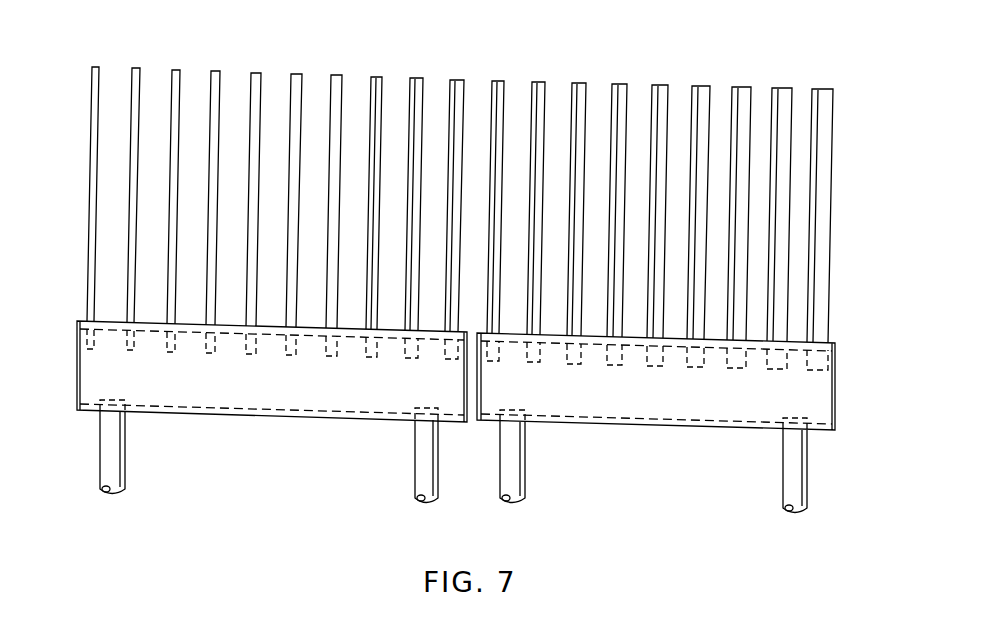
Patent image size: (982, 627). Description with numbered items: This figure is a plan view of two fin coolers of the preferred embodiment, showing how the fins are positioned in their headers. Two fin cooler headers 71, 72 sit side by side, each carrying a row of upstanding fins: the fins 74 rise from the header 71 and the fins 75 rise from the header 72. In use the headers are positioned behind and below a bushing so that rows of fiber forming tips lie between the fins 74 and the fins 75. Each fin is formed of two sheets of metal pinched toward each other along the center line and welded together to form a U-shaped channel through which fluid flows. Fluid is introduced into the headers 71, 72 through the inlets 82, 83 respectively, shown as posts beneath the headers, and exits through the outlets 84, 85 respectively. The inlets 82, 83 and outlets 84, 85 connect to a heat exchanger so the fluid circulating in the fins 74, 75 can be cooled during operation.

The fin cooler header 71 is at (683, 428).
The fin cooler header 72 is at (86, 412).
The fins 74 is at (830, 222).
The fins 75 is at (91, 196).
The inlet 82 is at (526, 449).
The inlet 83 is at (125, 440).
The outlet 84 is at (808, 455).
The outlet 85 is at (415, 449).